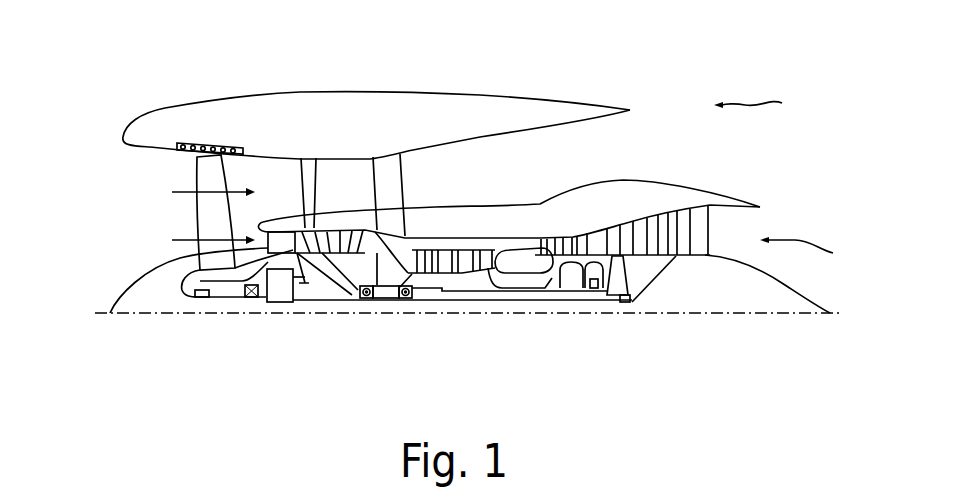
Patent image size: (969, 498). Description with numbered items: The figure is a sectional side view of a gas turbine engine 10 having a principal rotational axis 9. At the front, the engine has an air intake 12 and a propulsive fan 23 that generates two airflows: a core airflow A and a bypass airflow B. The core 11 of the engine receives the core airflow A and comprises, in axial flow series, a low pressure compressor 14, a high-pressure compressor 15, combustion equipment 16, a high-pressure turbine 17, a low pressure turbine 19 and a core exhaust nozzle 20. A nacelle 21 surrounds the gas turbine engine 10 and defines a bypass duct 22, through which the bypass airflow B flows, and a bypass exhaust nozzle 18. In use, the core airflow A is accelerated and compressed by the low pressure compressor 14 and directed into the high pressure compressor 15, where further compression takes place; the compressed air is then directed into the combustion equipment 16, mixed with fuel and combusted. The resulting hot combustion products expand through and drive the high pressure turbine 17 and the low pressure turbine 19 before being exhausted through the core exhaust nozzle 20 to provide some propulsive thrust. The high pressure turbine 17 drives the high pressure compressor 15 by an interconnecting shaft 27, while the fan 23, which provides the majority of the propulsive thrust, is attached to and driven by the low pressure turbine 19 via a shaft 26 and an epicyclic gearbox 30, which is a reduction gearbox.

The principal rotational axis 9 is at (730, 314).
The gas turbine engine 10 is at (363, 83).
The core 11 is at (532, 222).
The air intake 12 is at (127, 166).
The low pressure compressor 14 is at (338, 238).
The high-pressure compressor 15 is at (458, 257).
The combustion equipment 16 is at (517, 263).
The high-pressure turbine 17 is at (573, 237).
The bypass exhaust nozzle 18 is at (764, 105).
The low pressure turbine 19 is at (686, 245).
The core exhaust nozzle 20 is at (814, 253).
The nacelle 21 is at (385, 103).
The bypass duct 22 is at (607, 143).
The propulsive fan 23 is at (195, 228).
The shaft 26 is at (427, 301).
The interconnecting shaft 27 is at (484, 292).
The epicyclic gearbox 30 is at (280, 293).